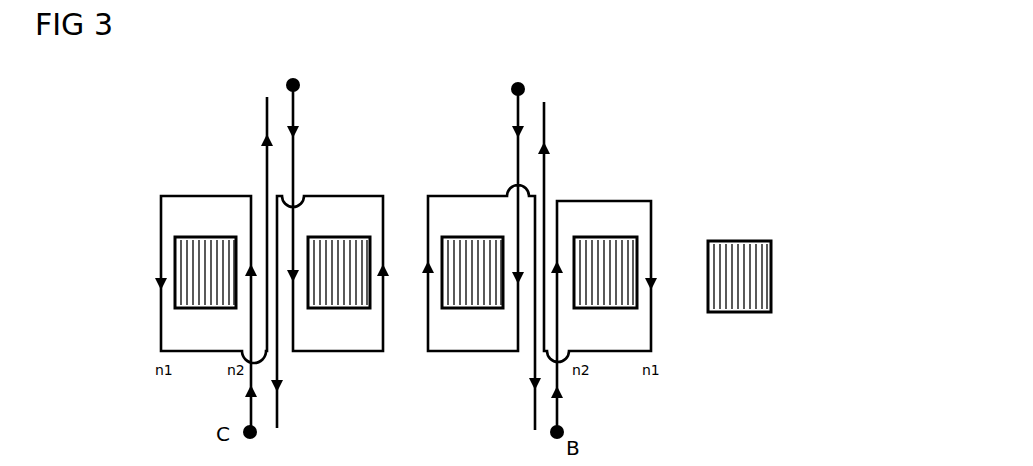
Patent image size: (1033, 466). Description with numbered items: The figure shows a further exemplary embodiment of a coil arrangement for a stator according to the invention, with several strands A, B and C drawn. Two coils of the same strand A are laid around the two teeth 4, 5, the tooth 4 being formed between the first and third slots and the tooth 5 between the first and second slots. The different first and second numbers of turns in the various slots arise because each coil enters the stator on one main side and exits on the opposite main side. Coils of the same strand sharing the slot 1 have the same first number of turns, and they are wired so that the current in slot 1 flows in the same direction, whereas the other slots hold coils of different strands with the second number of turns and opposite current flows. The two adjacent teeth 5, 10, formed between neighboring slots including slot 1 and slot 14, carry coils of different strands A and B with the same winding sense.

The first slot 1 is at (406, 252).
The tooth 4 is at (334, 237).
The tooth 5 is at (473, 237).
The tooth 10 is at (612, 237).
The slot 14 is at (694, 291).